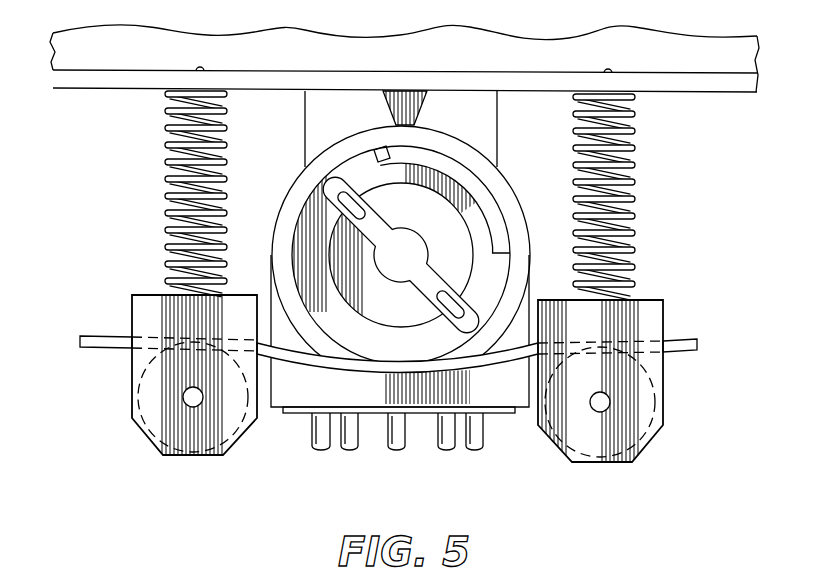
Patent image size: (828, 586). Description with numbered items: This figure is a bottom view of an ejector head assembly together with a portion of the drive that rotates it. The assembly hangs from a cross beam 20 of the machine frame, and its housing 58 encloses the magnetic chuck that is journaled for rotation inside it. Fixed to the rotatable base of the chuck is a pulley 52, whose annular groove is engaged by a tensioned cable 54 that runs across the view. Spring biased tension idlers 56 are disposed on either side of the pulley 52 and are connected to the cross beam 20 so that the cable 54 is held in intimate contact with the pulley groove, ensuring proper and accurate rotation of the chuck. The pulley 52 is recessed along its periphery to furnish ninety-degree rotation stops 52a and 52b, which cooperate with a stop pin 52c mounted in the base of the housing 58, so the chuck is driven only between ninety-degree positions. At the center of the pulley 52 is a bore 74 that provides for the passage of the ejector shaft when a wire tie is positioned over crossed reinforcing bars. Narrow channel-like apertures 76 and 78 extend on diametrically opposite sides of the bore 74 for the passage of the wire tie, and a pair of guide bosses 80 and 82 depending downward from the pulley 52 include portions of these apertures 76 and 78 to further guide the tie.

The cross beam 20 is at (717, 91).
The pulley 52 is at (474, 190).
The rotation stop 52a is at (495, 246).
The rotation stop 52b is at (382, 150).
The stop pin 52c is at (393, 149).
The tensioned cable 54 is at (96, 335).
The spring biased tension idler 56 is at (195, 437).
The housing 58 is at (300, 394).
The bore 74 is at (410, 263).
The channel-like aperture 76 is at (370, 192).
The channel-like aperture 78 is at (421, 291).
The guide boss 80 is at (348, 203).
The guide boss 82 is at (463, 317).